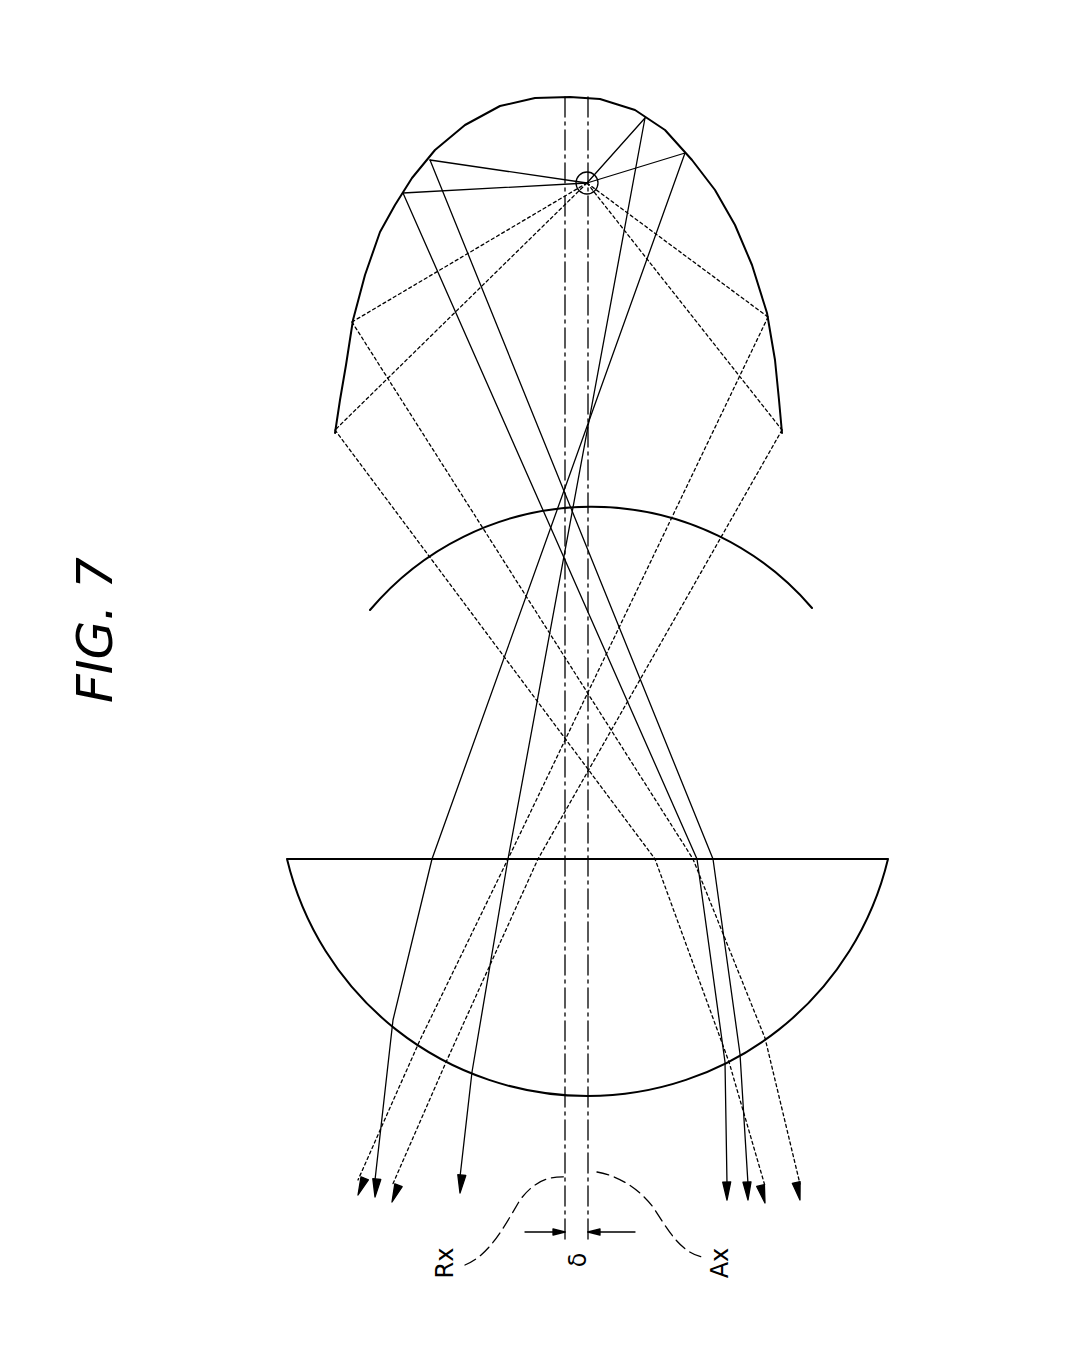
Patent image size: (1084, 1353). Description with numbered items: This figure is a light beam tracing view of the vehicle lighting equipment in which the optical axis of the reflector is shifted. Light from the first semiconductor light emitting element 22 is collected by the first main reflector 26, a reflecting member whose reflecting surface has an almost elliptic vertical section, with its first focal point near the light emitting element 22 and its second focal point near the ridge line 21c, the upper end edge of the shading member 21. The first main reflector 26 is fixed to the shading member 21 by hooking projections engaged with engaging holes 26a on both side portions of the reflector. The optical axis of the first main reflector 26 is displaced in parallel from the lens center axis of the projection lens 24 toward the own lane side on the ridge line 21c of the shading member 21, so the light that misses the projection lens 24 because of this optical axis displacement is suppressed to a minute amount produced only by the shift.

The first semiconductor light emitting element 22 is at (566, 158).
The first main reflector 26 is at (562, 265).
The engaging hole 26a is at (746, 250).
The shading member 21 is at (600, 600).
The ridge line 21c is at (374, 602).
The projection lens 24 is at (317, 935).